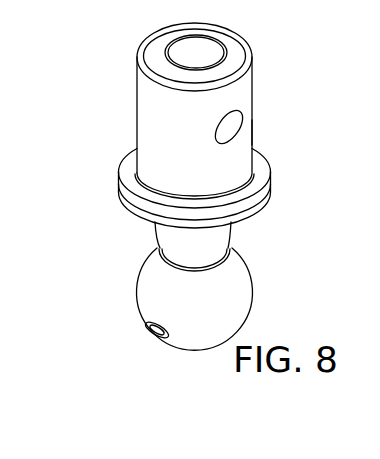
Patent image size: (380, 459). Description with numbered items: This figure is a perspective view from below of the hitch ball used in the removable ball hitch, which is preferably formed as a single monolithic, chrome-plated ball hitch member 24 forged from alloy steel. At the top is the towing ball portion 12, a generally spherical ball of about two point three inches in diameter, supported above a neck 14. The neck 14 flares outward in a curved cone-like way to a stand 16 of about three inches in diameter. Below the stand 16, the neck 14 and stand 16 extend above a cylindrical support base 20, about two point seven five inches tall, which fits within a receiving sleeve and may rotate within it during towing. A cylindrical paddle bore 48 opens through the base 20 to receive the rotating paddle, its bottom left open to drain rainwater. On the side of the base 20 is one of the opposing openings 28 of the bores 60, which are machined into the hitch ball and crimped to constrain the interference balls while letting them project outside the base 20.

The towing ball portion 12 is at (227, 297).
The neck 14 is at (212, 250).
The stand 16 is at (257, 198).
The support base 20 is at (232, 95).
The ball hitch member 24 is at (104, 61).
The openings 28 is at (252, 133).
The paddle bore 48 is at (197, 53).
The bores for the interference balls 60 is at (233, 117).